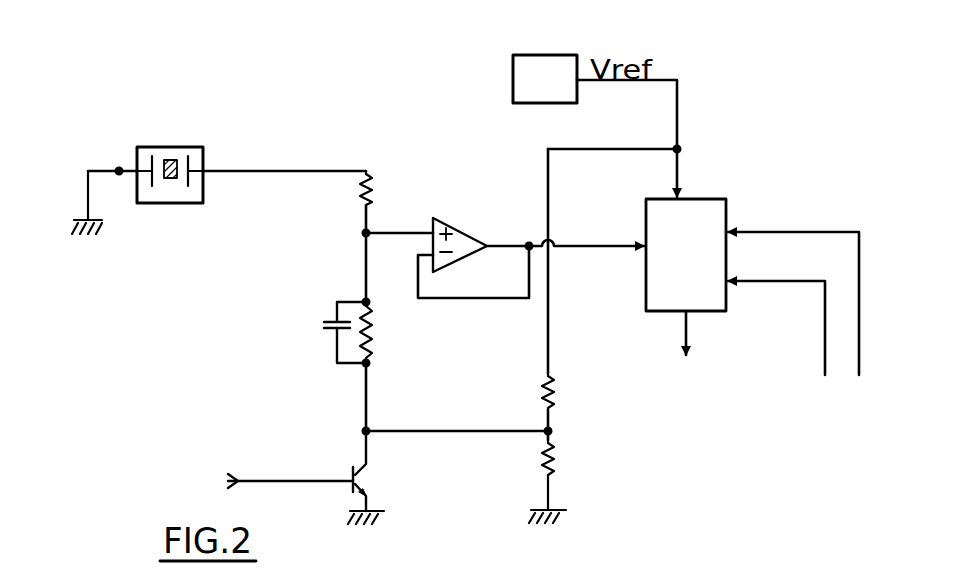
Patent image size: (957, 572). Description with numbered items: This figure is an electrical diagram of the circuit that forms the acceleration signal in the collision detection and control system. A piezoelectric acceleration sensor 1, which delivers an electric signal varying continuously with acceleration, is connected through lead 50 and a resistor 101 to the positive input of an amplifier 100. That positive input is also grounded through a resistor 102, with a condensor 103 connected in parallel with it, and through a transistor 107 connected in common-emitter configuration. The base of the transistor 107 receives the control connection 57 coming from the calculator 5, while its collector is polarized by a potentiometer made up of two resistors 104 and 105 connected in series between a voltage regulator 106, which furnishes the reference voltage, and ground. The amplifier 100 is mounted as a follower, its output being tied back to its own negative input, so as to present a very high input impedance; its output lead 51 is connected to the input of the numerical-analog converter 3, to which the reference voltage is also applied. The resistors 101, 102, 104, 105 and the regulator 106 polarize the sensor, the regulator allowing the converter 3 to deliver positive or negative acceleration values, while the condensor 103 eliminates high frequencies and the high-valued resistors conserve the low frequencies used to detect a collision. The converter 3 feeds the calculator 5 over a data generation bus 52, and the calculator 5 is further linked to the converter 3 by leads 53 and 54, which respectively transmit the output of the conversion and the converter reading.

The acceleration sensor 1 is at (170, 147).
The lead 50 is at (290, 171).
The resistor 101 is at (370, 200).
The amplifier 100 is at (465, 228).
The resistor 102 is at (372, 328).
The condensor 103 is at (318, 326).
The transistor 107 is at (373, 478).
The control connection 57 is at (292, 481).
The calculator 5 is at (219, 478).
The resistor 104 is at (555, 400).
The resistor 105 is at (556, 461).
The voltage regulator 106 is at (545, 79).
The numerical-analog converter 3 is at (642, 219).
The lead 51 is at (605, 252).
The data generation bus 52 is at (689, 328).
The lead 53 is at (858, 336).
The lead 54 is at (823, 308).